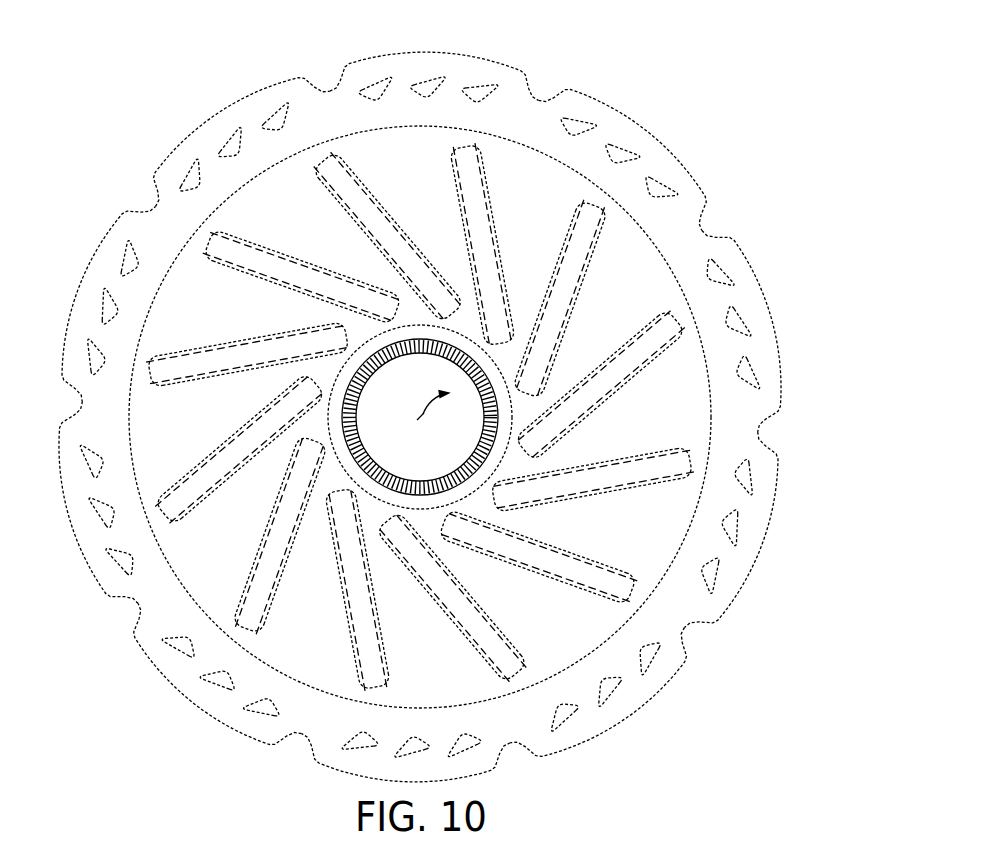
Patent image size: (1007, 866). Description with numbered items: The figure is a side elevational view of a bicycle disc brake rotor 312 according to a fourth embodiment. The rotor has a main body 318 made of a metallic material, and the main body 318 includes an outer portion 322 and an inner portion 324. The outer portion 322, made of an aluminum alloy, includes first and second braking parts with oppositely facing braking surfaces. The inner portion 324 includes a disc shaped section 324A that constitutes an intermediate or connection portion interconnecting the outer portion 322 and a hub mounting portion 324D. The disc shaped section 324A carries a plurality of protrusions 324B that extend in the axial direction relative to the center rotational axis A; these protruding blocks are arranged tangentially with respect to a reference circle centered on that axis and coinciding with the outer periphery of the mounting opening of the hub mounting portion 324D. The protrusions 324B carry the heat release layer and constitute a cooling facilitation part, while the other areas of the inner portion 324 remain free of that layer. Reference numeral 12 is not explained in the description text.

The brake disc 12 is at (468, 233).
The bicycle disc brake rotor 312 is at (426, 413).
The main body 318 is at (426, 413).
The outer portion 322 is at (692, 164).
The inner portion 324 is at (486, 358).
The disc shaped section 324A is at (678, 375).
The protrusion 324B is at (620, 380).
The hub mounting portion 324D is at (419, 514).